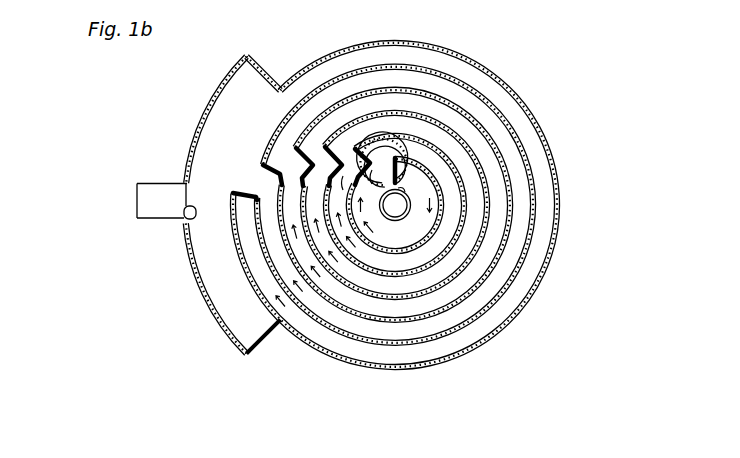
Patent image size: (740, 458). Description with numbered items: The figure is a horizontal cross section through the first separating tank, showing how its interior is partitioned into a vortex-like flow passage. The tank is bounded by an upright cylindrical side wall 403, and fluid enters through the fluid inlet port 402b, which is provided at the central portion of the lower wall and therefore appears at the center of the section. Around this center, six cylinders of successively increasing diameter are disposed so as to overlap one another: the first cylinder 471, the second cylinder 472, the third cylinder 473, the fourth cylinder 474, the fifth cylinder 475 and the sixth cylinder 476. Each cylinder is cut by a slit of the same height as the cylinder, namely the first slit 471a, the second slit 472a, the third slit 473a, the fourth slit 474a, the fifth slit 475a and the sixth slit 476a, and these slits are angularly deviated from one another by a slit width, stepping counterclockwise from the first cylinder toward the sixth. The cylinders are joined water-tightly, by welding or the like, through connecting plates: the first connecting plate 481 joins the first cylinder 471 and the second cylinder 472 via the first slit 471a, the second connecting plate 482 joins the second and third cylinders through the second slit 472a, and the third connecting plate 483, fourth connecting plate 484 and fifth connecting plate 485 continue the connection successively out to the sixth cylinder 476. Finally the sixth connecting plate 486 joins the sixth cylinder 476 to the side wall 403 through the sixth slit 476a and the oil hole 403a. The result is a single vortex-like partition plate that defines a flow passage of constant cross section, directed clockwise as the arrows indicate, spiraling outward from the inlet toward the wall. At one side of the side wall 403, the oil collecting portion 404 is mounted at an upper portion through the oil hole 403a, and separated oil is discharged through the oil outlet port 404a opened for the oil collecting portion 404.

The fluid inlet port 402b is at (373, 230).
The side wall 403 is at (557, 178).
The oil hole 403a is at (195, 183).
The oil collecting portion 404 is at (200, 293).
The oil outlet port 404a is at (184, 216).
The first cylinder 471 is at (421, 210).
The first slit 471a is at (418, 190).
The second cylinder 472 is at (441, 224).
The second slit 472a is at (402, 158).
The third cylinder 473 is at (457, 242).
The third slit 473a is at (360, 146).
The fourth cylinder 474 is at (470, 266).
The fourth slit 474a is at (297, 145).
The fifth cylinder 475 is at (407, 322).
The fifth slit 475a is at (264, 162).
The sixth cylinder 476 is at (470, 340).
The sixth slit 476a is at (230, 193).
The first connecting plate 481 is at (408, 172).
The second connecting plate 482 is at (388, 140).
The third connecting plate 483 is at (339, 135).
The fourth connecting plate 484 is at (290, 256).
The fifth connecting plate 485 is at (282, 237).
The sixth connecting plate 486 is at (255, 205).